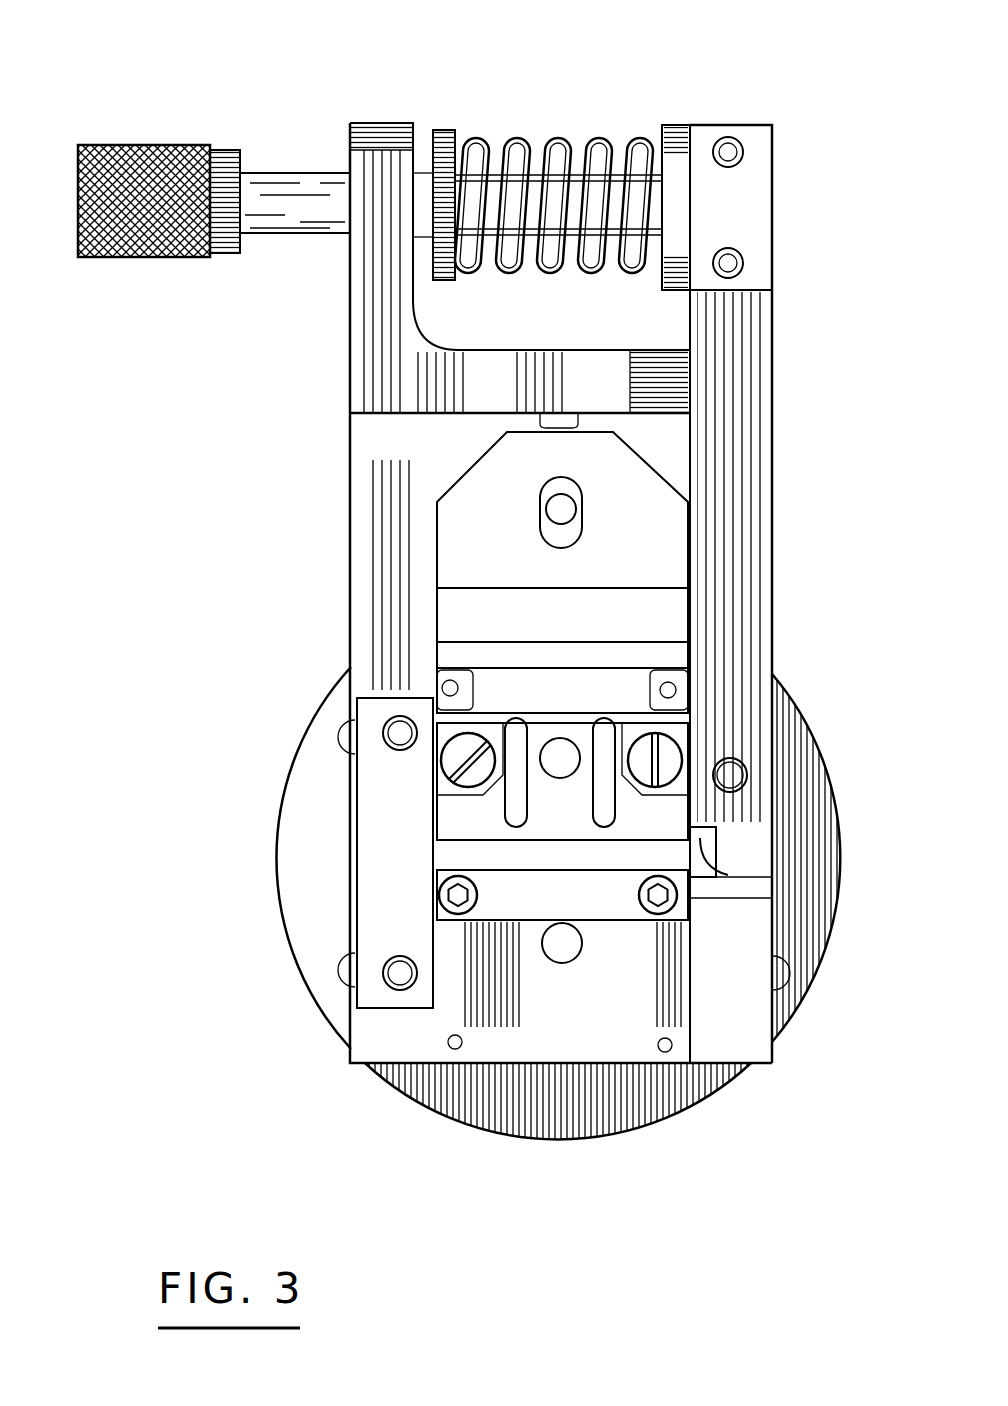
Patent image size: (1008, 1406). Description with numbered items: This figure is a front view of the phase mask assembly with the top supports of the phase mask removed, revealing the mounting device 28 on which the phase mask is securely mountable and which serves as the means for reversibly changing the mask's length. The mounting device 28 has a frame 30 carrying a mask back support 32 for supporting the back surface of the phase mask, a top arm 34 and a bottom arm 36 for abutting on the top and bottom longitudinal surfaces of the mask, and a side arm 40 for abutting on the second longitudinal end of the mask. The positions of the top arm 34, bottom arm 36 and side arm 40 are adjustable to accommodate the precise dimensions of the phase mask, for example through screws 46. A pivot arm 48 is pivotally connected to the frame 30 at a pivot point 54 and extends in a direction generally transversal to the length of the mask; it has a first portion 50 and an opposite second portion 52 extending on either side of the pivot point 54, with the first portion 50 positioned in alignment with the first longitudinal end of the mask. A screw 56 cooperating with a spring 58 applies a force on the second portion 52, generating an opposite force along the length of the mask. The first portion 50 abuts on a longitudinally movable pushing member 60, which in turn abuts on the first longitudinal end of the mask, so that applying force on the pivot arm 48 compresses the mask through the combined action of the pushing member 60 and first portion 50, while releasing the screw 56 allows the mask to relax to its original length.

The mounting device 28 is at (168, 470).
The frame 30 is at (360, 462).
The mask back support 32 is at (450, 852).
The top arm 34 is at (582, 918).
The bottom arm 36 is at (450, 815).
The side arm 40 is at (370, 868).
The screws 46 is at (395, 733).
The pivot arm 48 is at (773, 507).
The first portion 50 is at (752, 850).
The second portion 52 is at (758, 398).
The pivot point 54 is at (748, 775).
The screw 56 is at (288, 190).
The spring 58 is at (522, 150).
The pushing member 60 is at (717, 880).